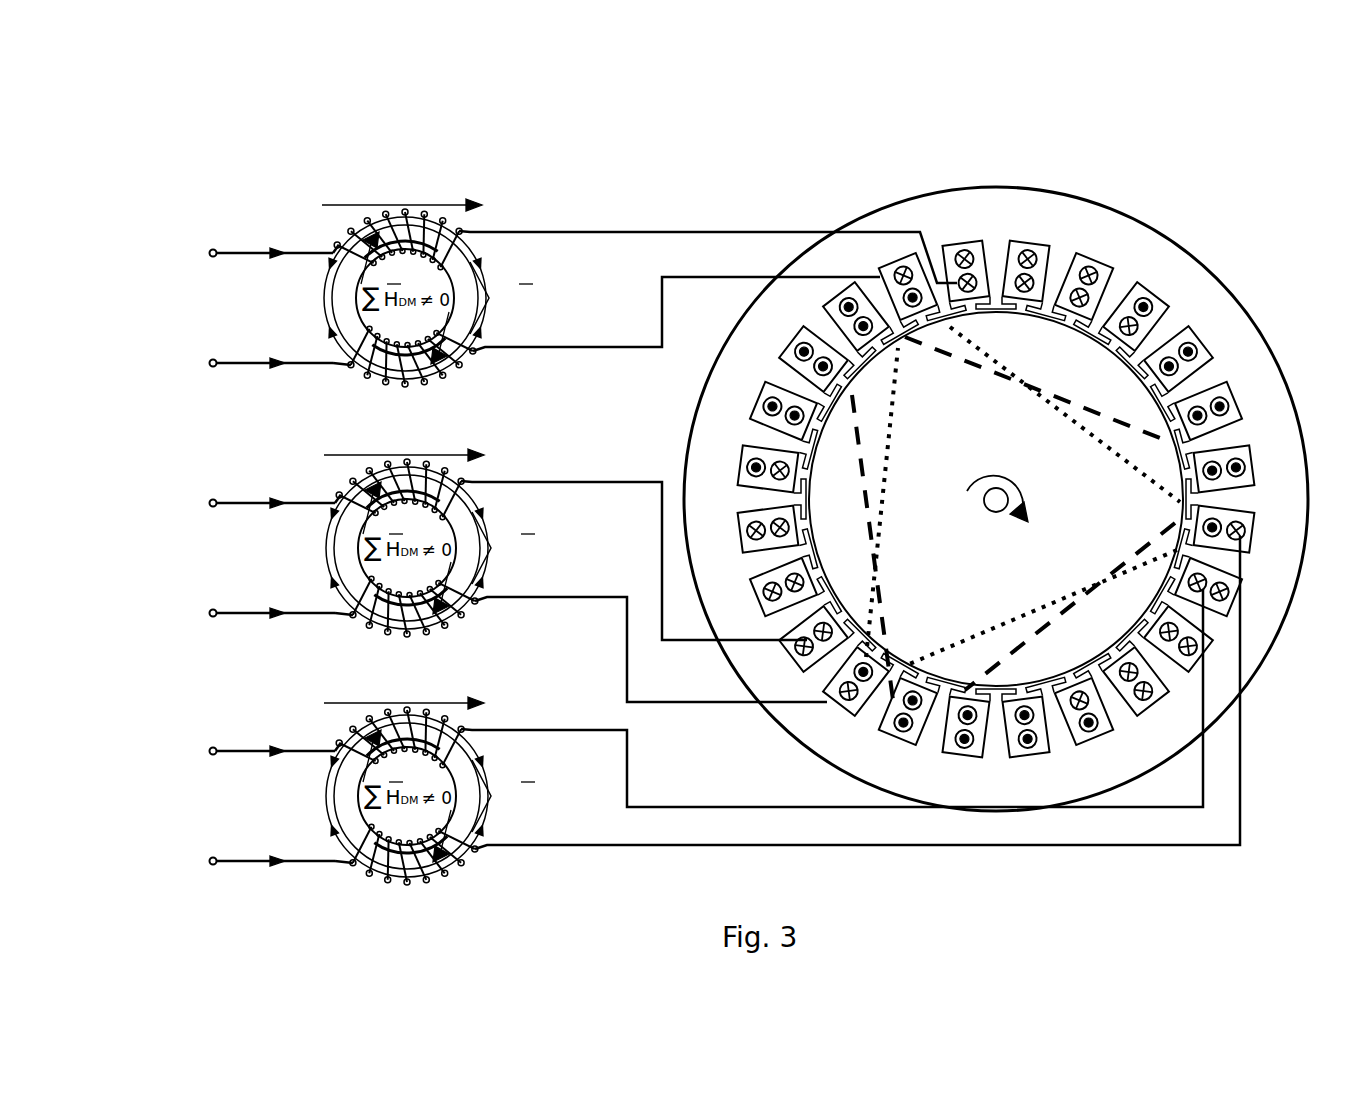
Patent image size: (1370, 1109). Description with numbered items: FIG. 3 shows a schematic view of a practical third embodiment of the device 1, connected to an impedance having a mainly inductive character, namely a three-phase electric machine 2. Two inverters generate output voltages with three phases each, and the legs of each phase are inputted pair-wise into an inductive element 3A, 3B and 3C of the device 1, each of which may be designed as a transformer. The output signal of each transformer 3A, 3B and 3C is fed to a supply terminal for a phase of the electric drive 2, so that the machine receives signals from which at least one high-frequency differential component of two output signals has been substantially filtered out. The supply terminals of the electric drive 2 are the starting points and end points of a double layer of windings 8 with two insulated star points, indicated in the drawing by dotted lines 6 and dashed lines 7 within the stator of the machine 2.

The device 1 is at (244, 393).
The electric machine 2 is at (996, 497).
The inductive element 3A is at (466, 345).
The inductive element 3B is at (466, 590).
The inductive element 3C is at (466, 838).
The first winding system (dotted) 6 is at (958, 358).
The second winding system (dashed) 7 is at (1000, 623).
The windings 8 is at (1133, 295).